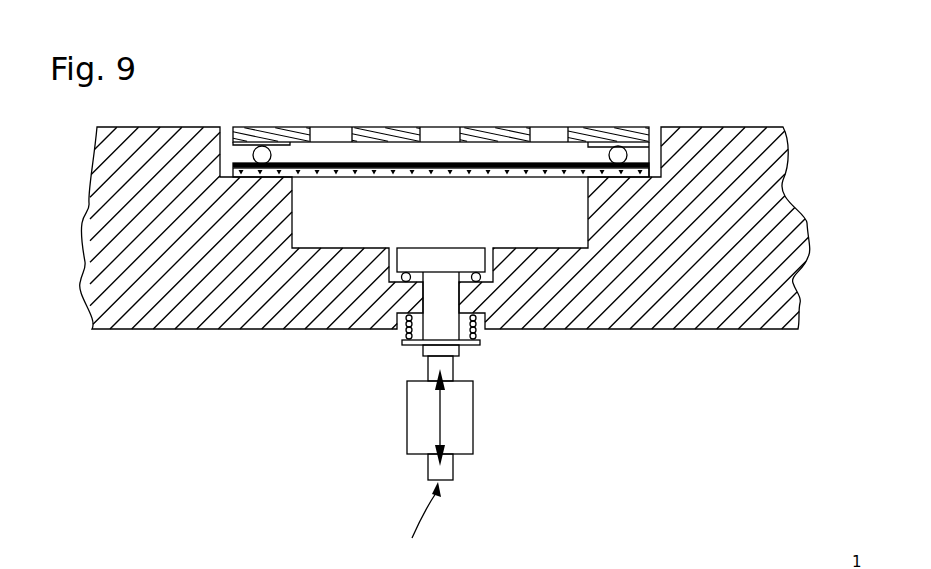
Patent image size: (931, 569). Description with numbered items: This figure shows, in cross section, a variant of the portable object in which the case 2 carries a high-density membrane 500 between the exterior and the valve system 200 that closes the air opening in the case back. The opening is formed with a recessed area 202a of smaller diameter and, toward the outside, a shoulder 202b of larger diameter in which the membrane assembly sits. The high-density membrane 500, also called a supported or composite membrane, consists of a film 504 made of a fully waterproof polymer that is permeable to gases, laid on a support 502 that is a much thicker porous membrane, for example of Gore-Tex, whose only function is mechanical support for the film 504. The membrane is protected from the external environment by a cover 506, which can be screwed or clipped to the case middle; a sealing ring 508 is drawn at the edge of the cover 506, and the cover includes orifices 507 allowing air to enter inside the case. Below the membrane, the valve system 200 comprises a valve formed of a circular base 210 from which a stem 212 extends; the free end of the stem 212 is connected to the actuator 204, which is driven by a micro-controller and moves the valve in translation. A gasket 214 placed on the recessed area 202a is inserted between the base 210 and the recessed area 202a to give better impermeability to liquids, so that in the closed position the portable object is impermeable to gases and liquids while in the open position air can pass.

The case 2 is at (411, 226).
The recessed area 202a is at (470, 298).
The shoulder 202b is at (223, 178).
The high-density membrane 500 is at (447, 226).
The support membrane 502 is at (637, 176).
The film 504 is at (644, 161).
The cover 506 is at (615, 146).
The orifices 507 is at (325, 135).
The O-ring 508 is at (261, 146).
The circular base 210 is at (405, 261).
The stem 212 is at (435, 318).
The gasket 214 is at (400, 279).
The actuator 204 is at (466, 420).
The valve system 200 is at (416, 521).